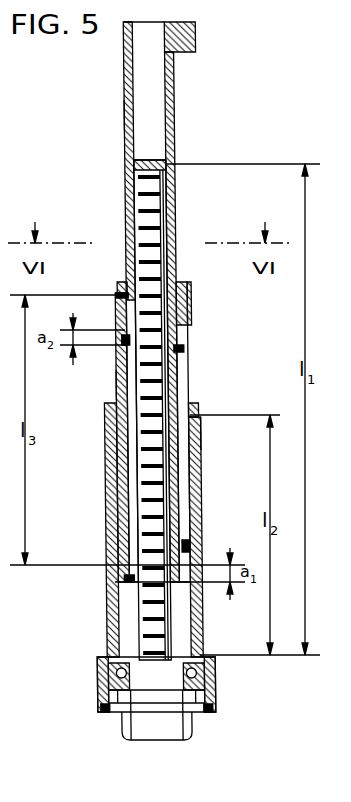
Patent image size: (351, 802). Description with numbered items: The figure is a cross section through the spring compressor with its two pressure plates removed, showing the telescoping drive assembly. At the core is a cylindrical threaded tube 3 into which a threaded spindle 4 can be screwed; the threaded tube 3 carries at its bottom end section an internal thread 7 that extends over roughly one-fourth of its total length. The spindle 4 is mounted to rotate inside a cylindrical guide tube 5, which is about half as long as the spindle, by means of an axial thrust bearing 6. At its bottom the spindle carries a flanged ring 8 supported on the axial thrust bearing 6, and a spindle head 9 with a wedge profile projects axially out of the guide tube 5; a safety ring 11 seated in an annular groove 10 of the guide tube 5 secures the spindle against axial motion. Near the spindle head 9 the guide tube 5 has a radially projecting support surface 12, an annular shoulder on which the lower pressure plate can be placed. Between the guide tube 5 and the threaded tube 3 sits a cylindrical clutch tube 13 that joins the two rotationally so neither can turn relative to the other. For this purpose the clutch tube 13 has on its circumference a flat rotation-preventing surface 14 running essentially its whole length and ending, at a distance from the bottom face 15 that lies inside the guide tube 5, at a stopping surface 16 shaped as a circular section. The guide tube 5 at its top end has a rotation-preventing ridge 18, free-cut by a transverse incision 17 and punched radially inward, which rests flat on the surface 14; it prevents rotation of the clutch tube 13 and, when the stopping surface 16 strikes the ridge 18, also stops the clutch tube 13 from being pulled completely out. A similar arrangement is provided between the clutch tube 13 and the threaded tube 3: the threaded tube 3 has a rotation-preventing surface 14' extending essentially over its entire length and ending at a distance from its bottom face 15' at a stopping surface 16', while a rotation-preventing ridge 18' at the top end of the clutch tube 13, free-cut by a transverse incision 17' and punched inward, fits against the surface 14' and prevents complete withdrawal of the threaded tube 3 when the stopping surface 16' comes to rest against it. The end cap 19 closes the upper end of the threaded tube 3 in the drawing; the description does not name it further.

The threaded tube 3 is at (175, 87).
The threaded spindle 4 is at (136, 197).
The guide tube 5 is at (107, 528).
The axial thrust bearing 6 is at (207, 672).
The internal thread 7 is at (190, 312).
The flanged ring 8 is at (207, 696).
The spindle head 9 is at (128, 728).
The annular groove 10 is at (98, 710).
The safety ring 11 is at (206, 714).
The support surface 12 is at (102, 658).
The clutch tube 13 is at (119, 388).
The rotation-preventing surface 14 is at (172, 432).
The rotation-preventing surface 14' is at (101, 112).
The bottom face 15 is at (100, 591).
The bottom face 15' is at (204, 346).
The stopping surface 16 is at (208, 525).
The stopping surface 16' is at (106, 354).
The transverse incision 17 is at (220, 433).
The transverse incision 17' is at (103, 285).
The rotation-preventing ridge 18 is at (211, 401).
The rotation-preventing ridge 18' is at (112, 271).
The end cap 19 is at (190, 40).